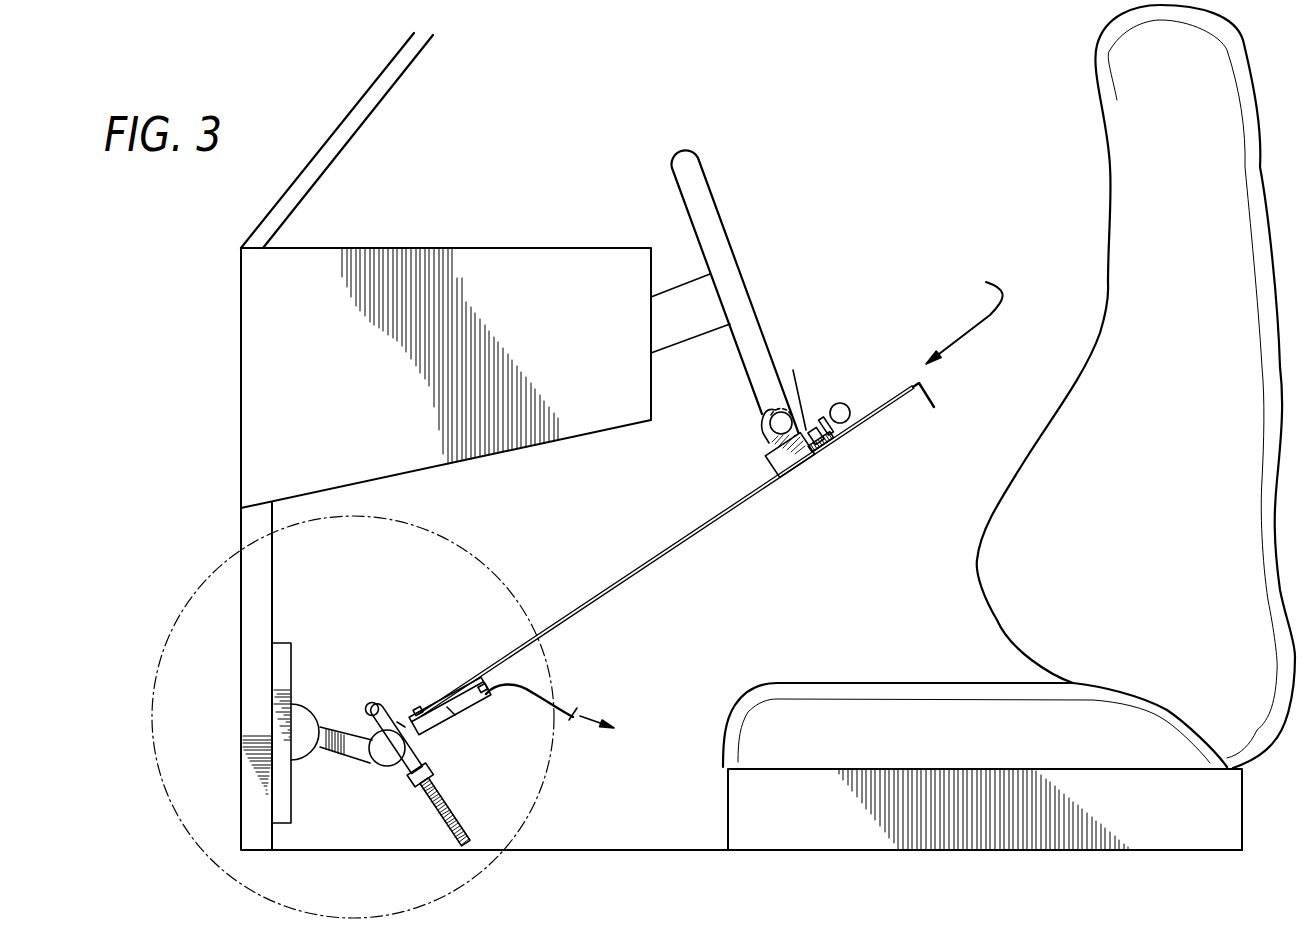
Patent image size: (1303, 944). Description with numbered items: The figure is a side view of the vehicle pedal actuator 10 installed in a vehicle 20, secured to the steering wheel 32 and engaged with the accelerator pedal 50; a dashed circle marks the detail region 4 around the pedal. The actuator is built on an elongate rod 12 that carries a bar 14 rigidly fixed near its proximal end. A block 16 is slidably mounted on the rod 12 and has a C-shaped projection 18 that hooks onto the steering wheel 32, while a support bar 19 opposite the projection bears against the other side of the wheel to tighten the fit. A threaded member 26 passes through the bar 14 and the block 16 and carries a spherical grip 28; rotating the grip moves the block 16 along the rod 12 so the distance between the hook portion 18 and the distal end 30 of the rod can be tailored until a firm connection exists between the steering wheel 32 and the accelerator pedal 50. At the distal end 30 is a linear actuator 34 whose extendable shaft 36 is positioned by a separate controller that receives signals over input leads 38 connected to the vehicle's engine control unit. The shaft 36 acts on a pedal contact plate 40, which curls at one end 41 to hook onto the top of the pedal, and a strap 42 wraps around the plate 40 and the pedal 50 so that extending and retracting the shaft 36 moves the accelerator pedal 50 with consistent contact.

The detail view circle 4 is at (170, 631).
The vehicle pedal actuator 10 is at (964, 315).
The elongate rod 12 is at (686, 540).
The bar 14 is at (835, 440).
The block 16 is at (800, 465).
The C-shaped projection 18 is at (760, 437).
The support bar 19 is at (806, 430).
The vehicle 20 is at (358, 100).
The threaded member 26 is at (820, 425).
The spherical grip 28 is at (848, 408).
The distal end 30 is at (447, 697).
The steering wheel 32 is at (705, 172).
The linear actuator 34 is at (455, 708).
The extendable shaft 36 is at (397, 722).
The cables 38 is at (567, 705).
The pedal contact plate 40 is at (388, 712).
The curled end 41 is at (368, 703).
The strap 42 is at (412, 780).
The accelerator pedal 50 is at (385, 708).